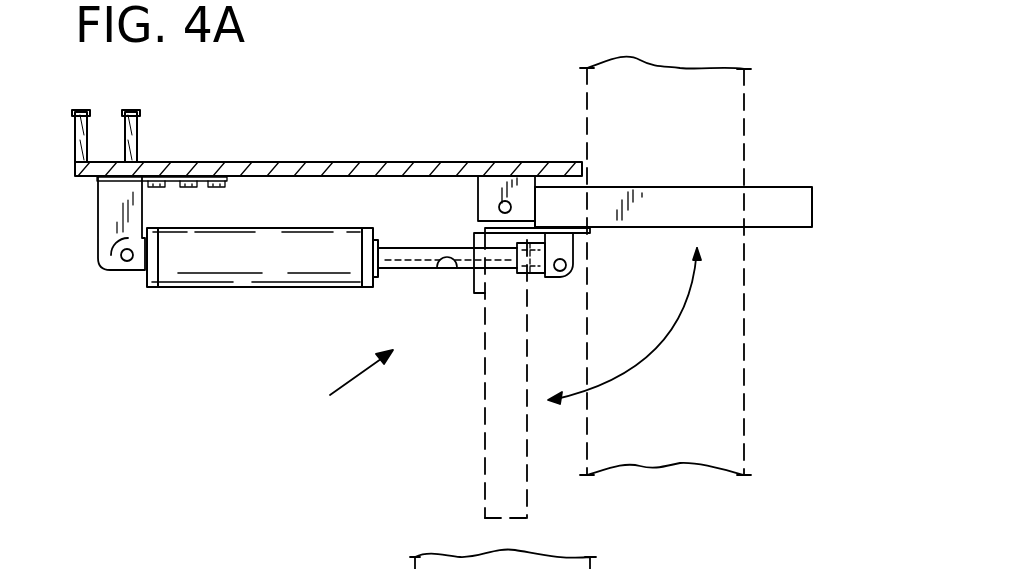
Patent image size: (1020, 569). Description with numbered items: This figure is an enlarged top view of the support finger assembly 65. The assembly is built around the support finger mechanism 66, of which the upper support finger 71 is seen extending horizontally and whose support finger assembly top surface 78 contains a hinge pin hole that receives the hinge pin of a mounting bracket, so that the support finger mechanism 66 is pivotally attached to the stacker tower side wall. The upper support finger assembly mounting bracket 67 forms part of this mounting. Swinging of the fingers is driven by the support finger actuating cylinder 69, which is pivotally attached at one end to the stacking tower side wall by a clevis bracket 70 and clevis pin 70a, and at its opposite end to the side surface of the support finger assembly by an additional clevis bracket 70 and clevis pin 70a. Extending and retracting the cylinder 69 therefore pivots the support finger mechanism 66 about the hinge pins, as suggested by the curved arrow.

The support finger assembly 65 is at (345, 385).
The support finger mechanism 66 is at (660, 187).
The upper support finger assembly mounting bracket 67 is at (478, 200).
The support finger actuating cylinder 69 is at (295, 287).
The clevis bracket 70 is at (110, 212).
The clevis pin 70a is at (127, 262).
The upper support finger 71 is at (780, 190).
The support finger assembly top surface 78 is at (812, 204).